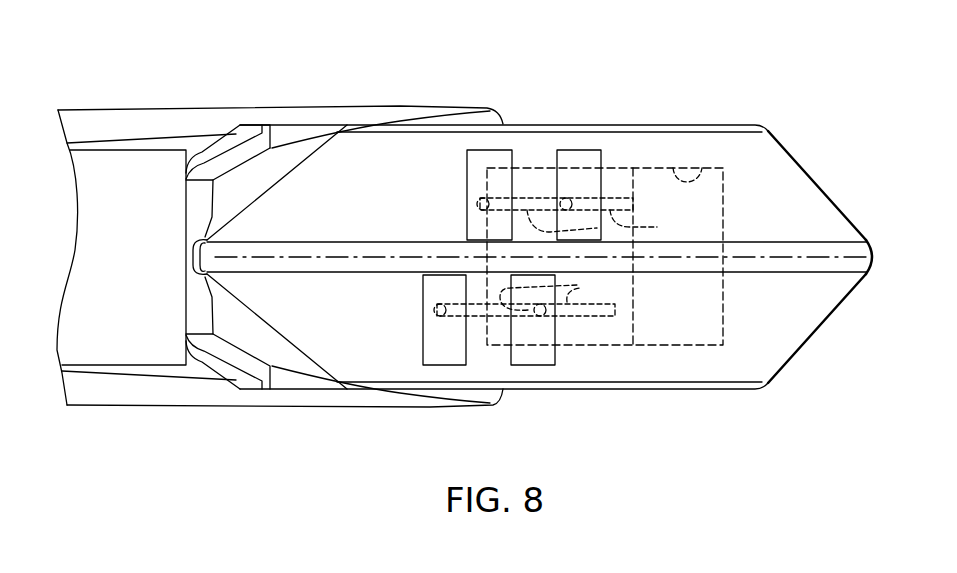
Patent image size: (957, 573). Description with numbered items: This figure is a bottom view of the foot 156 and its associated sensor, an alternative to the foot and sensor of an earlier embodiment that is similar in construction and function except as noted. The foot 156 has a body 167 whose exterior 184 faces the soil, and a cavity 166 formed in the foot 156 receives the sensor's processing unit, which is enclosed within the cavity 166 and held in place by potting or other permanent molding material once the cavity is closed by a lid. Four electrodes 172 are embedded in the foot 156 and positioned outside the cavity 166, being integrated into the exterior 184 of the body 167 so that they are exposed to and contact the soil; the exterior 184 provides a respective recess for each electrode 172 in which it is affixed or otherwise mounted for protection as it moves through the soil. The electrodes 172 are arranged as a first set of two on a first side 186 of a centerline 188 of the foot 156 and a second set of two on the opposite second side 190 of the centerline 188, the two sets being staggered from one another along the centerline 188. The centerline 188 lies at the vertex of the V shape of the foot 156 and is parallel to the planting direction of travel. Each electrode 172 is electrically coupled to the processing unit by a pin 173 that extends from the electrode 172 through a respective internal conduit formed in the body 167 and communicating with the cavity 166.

The foot 156 is at (770, 98).
The cavity 166 is at (702, 157).
The body 167 is at (770, 160).
The electrodes 172 is at (570, 150).
The pin 173 is at (565, 257).
The exterior 184 is at (787, 192).
The first side 186 is at (815, 228).
The centerline 188 is at (763, 259).
The second side 190 is at (822, 303).